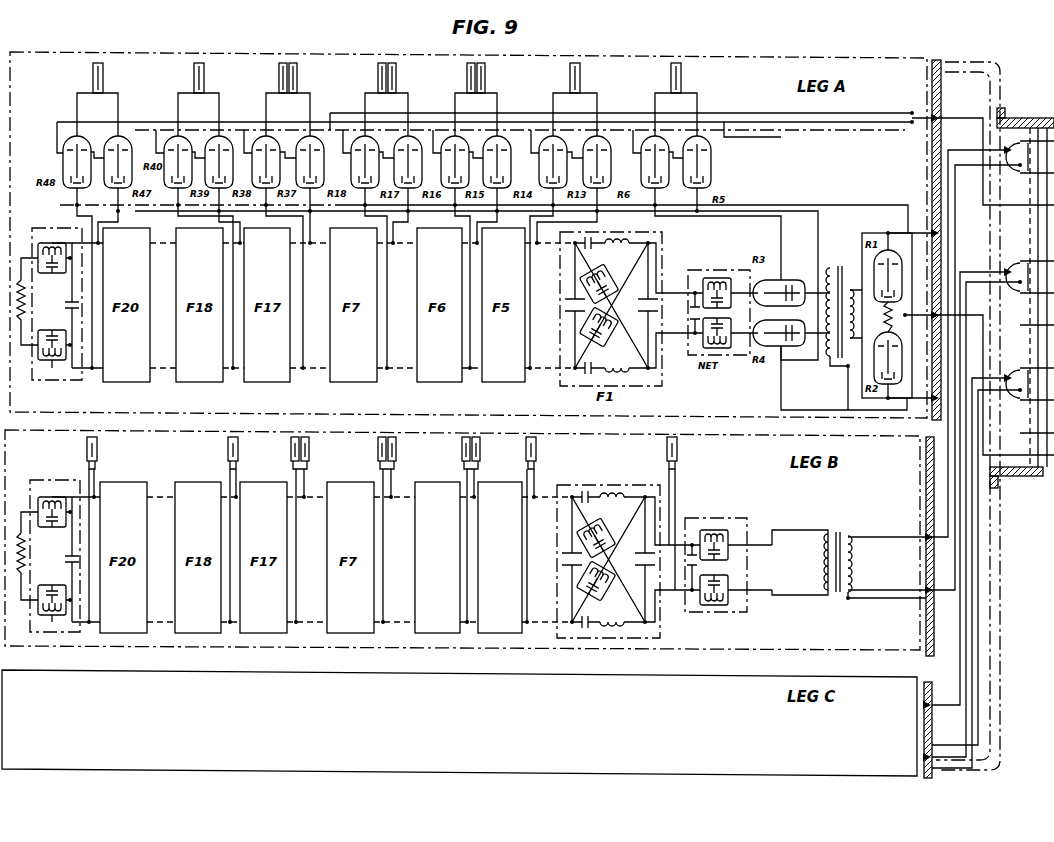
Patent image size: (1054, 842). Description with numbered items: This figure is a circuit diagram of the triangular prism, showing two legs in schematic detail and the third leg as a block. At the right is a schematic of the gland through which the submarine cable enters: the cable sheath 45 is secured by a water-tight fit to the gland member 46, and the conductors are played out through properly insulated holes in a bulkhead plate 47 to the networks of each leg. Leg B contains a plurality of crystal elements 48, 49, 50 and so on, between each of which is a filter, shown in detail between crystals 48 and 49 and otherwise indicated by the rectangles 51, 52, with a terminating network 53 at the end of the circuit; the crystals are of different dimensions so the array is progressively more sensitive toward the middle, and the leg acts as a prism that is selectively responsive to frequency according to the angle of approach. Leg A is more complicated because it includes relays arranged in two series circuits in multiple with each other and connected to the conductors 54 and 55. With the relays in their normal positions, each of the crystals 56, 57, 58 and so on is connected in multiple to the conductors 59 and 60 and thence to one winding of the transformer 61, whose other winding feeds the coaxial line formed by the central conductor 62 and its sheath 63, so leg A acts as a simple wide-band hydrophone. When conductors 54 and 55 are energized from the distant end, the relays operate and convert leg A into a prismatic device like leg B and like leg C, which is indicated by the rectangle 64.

The sheath of the cable 45 is at (1043, 478).
The gland member 46 is at (999, 486).
The bulkhead plate 47 is at (940, 616).
The crystal element 48 is at (678, 442).
The crystal element 49 is at (537, 440).
The crystal element 50 is at (477, 440).
The filter rectangle 51 is at (500, 634).
The filter rectangle 52 is at (433, 634).
The terminating network 53 is at (50, 616).
The conductor 54 is at (1016, 443).
The conductor 55 is at (1016, 262).
The crystal 56 is at (681, 64).
The crystal 57 is at (581, 64).
The crystal 58 is at (486, 64).
The conductor 59 is at (740, 205).
The conductor 60 is at (760, 216).
The transformer 61 is at (857, 263).
The central conductor 62 is at (1016, 160).
The sheath 63 is at (1035, 118).
The rectangle indicating leg C 64 is at (555, 778).